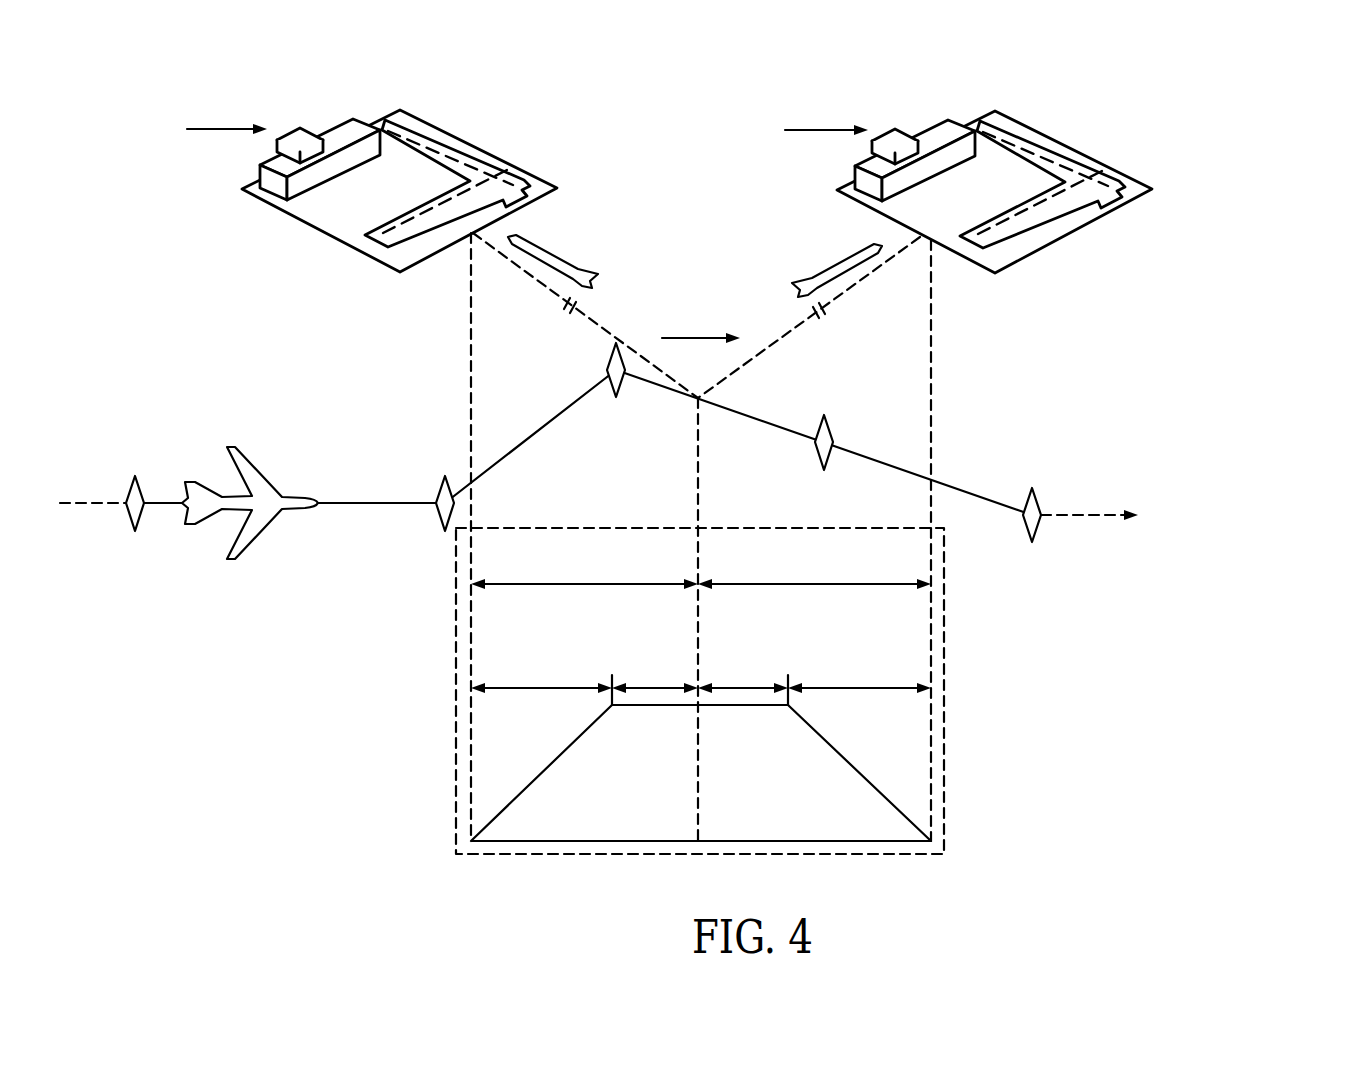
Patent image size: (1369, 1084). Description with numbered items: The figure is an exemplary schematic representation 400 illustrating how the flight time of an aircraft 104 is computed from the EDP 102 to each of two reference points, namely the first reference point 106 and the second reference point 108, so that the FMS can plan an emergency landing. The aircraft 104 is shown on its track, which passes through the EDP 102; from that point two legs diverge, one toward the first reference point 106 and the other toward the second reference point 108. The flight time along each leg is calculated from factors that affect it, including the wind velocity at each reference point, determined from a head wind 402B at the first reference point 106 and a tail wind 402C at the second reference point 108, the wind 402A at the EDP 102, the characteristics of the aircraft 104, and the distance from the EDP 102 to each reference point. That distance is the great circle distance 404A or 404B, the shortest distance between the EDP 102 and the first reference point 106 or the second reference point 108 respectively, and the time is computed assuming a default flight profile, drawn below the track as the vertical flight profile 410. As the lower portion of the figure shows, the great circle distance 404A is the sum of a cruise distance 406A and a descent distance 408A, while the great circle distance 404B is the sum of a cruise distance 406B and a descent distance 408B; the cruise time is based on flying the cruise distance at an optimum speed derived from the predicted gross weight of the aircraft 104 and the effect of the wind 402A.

The schematic representation 400 is at (1101, 825).
The EDP 102 is at (698, 398).
The aircraft 104 is at (228, 452).
The first reference point 106 is at (335, 229).
The second reference point 108 is at (1055, 233).
The wind 402A is at (692, 338).
The head wind 402B is at (217, 129).
The tail wind 402C is at (818, 130).
The great circle distance 404A is at (633, 583).
The great circle distance 404B is at (862, 583).
The cruise distance 406A is at (652, 688).
The cruise distance 406B is at (748, 688).
The descent distance 408A is at (538, 688).
The descent distance 408B is at (857, 688).
The vertical flight profile 410 is at (456, 732).